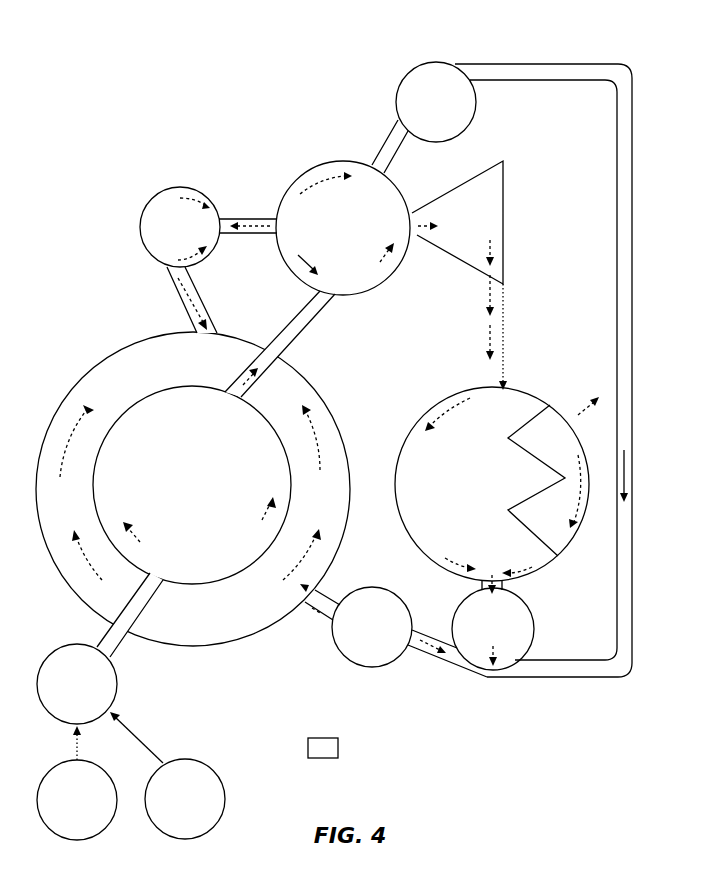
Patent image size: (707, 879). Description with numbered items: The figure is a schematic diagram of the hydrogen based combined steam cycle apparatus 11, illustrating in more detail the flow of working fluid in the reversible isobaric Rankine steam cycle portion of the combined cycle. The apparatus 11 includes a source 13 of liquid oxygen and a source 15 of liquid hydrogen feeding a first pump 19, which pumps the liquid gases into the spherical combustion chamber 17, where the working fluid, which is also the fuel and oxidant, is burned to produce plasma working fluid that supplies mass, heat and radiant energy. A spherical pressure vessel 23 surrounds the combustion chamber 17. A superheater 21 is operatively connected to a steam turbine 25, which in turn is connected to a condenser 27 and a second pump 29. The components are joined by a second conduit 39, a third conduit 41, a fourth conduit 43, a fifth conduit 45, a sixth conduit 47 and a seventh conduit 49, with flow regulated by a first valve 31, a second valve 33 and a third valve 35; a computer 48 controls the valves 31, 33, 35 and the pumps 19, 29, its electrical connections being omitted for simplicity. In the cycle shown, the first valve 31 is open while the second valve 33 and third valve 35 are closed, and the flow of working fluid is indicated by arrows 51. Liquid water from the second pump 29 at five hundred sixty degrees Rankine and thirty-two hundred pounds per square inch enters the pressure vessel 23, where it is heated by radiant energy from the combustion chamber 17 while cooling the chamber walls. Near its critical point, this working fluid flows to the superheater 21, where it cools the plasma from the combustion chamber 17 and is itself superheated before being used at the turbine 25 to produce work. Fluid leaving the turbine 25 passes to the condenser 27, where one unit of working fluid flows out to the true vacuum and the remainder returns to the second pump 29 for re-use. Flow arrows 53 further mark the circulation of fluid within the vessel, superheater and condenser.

The hydrogen based combined steam cycle apparatus 11 is at (268, 790).
The source of liquid oxygen 13 is at (110, 774).
The source of liquid hydrogen 15 is at (216, 776).
The combustion chamber 17 is at (192, 485).
The first pump 19 is at (118, 696).
The superheater 21 is at (312, 167).
The pressure vessel 23 is at (258, 641).
The steam turbine 25 is at (450, 190).
The condenser 27 is at (470, 388).
The second pump 29 is at (458, 613).
The first valve 31 is at (440, 62).
The second valve 33 is at (380, 586).
The third valve 35 is at (188, 188).
The second conduit 39 is at (310, 607).
The third conduit 41 is at (197, 312).
The fourth conduit 43 is at (254, 217).
The fifth conduit 45 is at (382, 148).
The sixth conduit 47 is at (302, 343).
The computer 48 is at (315, 756).
The seventh conduit 49 is at (614, 133).
The arrows showing flow of working fluid 51 is at (440, 660).
The steam flow arrows 53 is at (322, 422).